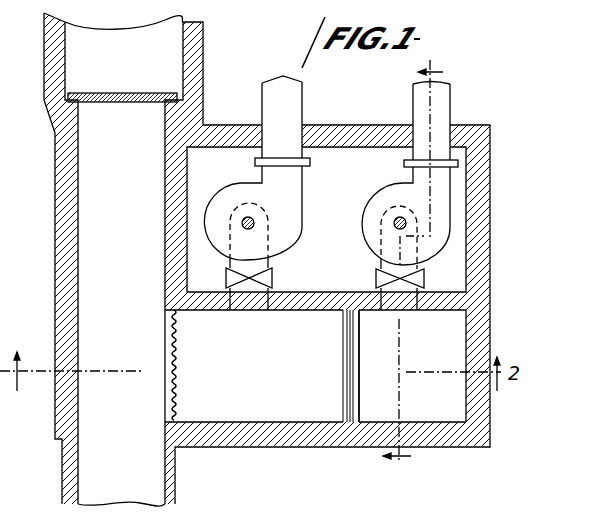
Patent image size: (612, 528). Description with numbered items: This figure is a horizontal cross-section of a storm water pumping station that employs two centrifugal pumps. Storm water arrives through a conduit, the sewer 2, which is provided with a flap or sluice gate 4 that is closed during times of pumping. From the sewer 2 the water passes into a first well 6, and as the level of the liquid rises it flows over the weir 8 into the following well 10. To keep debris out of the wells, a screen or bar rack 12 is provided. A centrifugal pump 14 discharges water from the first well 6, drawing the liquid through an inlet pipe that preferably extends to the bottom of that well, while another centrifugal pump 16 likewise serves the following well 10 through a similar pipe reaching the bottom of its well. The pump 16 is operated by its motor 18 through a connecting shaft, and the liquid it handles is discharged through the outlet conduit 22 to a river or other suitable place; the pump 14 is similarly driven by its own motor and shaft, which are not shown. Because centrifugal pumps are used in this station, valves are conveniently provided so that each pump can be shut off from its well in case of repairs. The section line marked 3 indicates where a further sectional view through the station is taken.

The sewer 2 is at (100, 261).
The section line 3- 3 is at (414, 266).
The flap or sluice gate 4 is at (115, 93).
The first well 6 is at (254, 366).
The weir 8 is at (358, 341).
The following well 10 is at (412, 366).
The screen or bar rack 12 is at (170, 388).
The centrifugal pump 14 is at (285, 240).
The centrifugal pump 16 is at (434, 245).
The motor 18 is at (374, 277).
The outlet conduit 22 is at (449, 98).